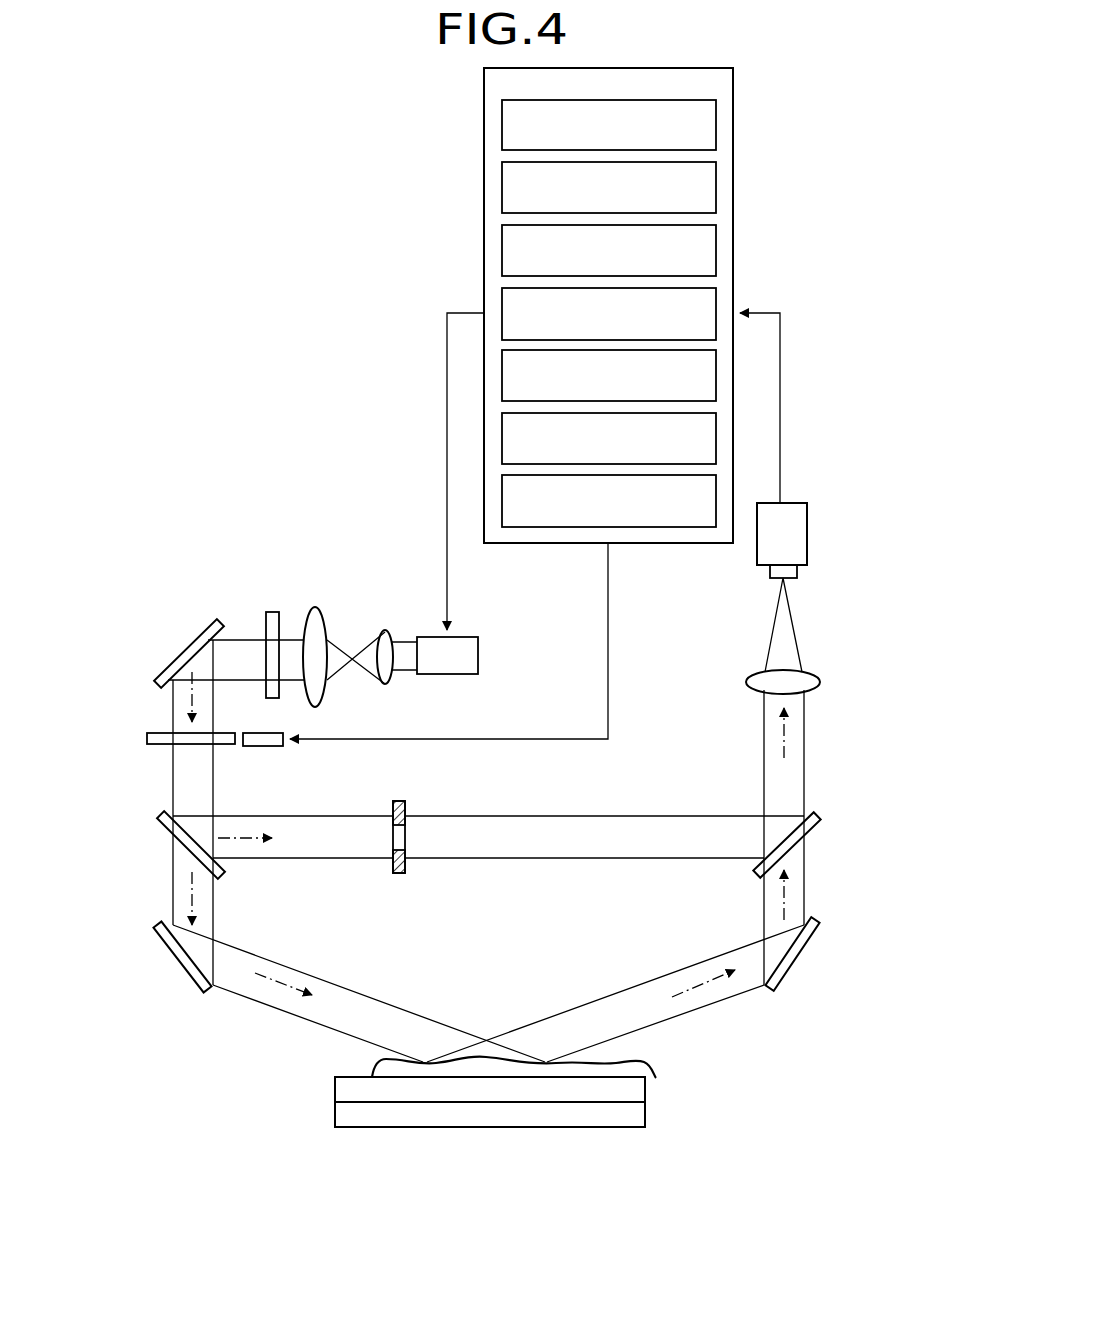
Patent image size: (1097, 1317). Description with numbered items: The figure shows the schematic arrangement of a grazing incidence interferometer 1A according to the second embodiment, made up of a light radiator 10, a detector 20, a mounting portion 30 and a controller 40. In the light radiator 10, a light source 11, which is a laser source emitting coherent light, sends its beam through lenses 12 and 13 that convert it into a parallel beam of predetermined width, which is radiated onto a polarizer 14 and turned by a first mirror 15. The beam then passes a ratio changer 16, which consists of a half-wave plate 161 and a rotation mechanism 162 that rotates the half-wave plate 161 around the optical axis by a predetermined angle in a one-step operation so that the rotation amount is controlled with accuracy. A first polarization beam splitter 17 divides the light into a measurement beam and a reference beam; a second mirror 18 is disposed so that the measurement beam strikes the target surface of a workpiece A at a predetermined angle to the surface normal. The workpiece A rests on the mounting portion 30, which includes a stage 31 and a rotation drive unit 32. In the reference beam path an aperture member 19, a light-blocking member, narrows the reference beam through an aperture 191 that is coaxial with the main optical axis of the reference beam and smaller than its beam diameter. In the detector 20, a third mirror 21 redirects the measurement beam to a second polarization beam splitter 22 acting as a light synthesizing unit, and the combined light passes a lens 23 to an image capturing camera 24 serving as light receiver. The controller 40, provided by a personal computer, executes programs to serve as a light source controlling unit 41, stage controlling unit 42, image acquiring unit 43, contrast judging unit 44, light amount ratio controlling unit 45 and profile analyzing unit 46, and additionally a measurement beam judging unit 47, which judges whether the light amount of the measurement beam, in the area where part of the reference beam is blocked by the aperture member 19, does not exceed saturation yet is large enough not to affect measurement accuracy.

The grazing incidence interferometer 1A is at (262, 281).
The light radiator 10 is at (152, 561).
The light source 11 is at (478, 656).
The lens 12 is at (385, 628).
The lens 13 is at (317, 608).
The polarizer 14 is at (272, 612).
The first mirror 15 is at (205, 622).
The ratio changer 16 is at (145, 720).
The λ/2 plate 161 is at (225, 746).
The rotation mechanism 162 is at (273, 748).
The first polarization beam splitter 17 is at (157, 830).
The second mirror 18 is at (155, 937).
The aperture member 19 is at (432, 860).
The aperture 191 is at (405, 830).
The detector 20 is at (838, 627).
The third mirror 21 is at (822, 935).
The second polarization beam splitter 22 is at (822, 828).
The lens 23 is at (820, 682).
The image capturing camera 24 is at (808, 530).
The mounting portion 30 is at (344, 1144).
The stage 31 is at (335, 1094).
The rotation drive unit 32 is at (335, 1119).
The controller 40 is at (733, 78).
The light source controlling unit 41 is at (716, 127).
The stage controlling unit 42 is at (716, 190).
The image acquiring unit 43 is at (716, 250).
The contrast judging unit 44 is at (716, 318).
The light amount ratio controlling unit 45 is at (716, 375).
The profile analyzing unit 46 is at (716, 440).
The measurement beam judging unit 47 is at (697, 527).
The workpiece A is at (614, 1063).